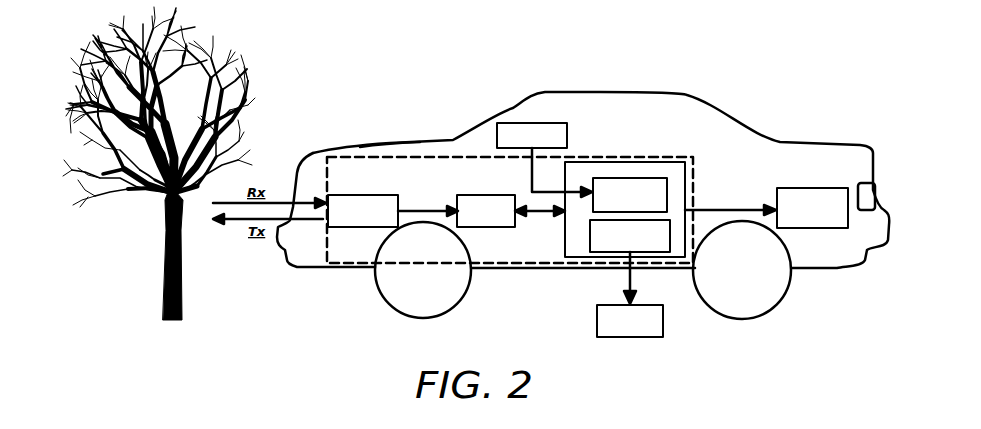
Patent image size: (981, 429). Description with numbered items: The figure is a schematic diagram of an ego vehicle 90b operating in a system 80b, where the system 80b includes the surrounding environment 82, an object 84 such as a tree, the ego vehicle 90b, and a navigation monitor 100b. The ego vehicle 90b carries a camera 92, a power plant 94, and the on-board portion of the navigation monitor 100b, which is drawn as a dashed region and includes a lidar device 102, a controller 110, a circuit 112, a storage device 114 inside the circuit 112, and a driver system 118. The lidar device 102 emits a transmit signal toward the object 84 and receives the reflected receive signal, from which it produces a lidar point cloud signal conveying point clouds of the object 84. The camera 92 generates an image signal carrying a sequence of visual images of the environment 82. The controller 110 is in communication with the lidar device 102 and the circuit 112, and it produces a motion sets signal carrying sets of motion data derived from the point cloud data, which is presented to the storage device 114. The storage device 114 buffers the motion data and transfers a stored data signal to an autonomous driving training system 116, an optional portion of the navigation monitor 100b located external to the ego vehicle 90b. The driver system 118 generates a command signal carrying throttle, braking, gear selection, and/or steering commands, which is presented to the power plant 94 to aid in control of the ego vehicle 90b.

The object 84 is at (195, 35).
The environment 82 is at (642, 56).
The system 80b is at (360, 80).
The ego vehicle 90b is at (410, 142).
The navigation monitor 100b is at (370, 158).
The lidar device 102 is at (338, 195).
The controller 110 is at (485, 195).
The camera 92 is at (567, 128).
The circuit 112 is at (565, 232).
The driver system 118 is at (667, 185).
The storage device 114 is at (670, 235).
The power plant 94 is at (817, 188).
The autonomous driving training system 116 is at (597, 312).